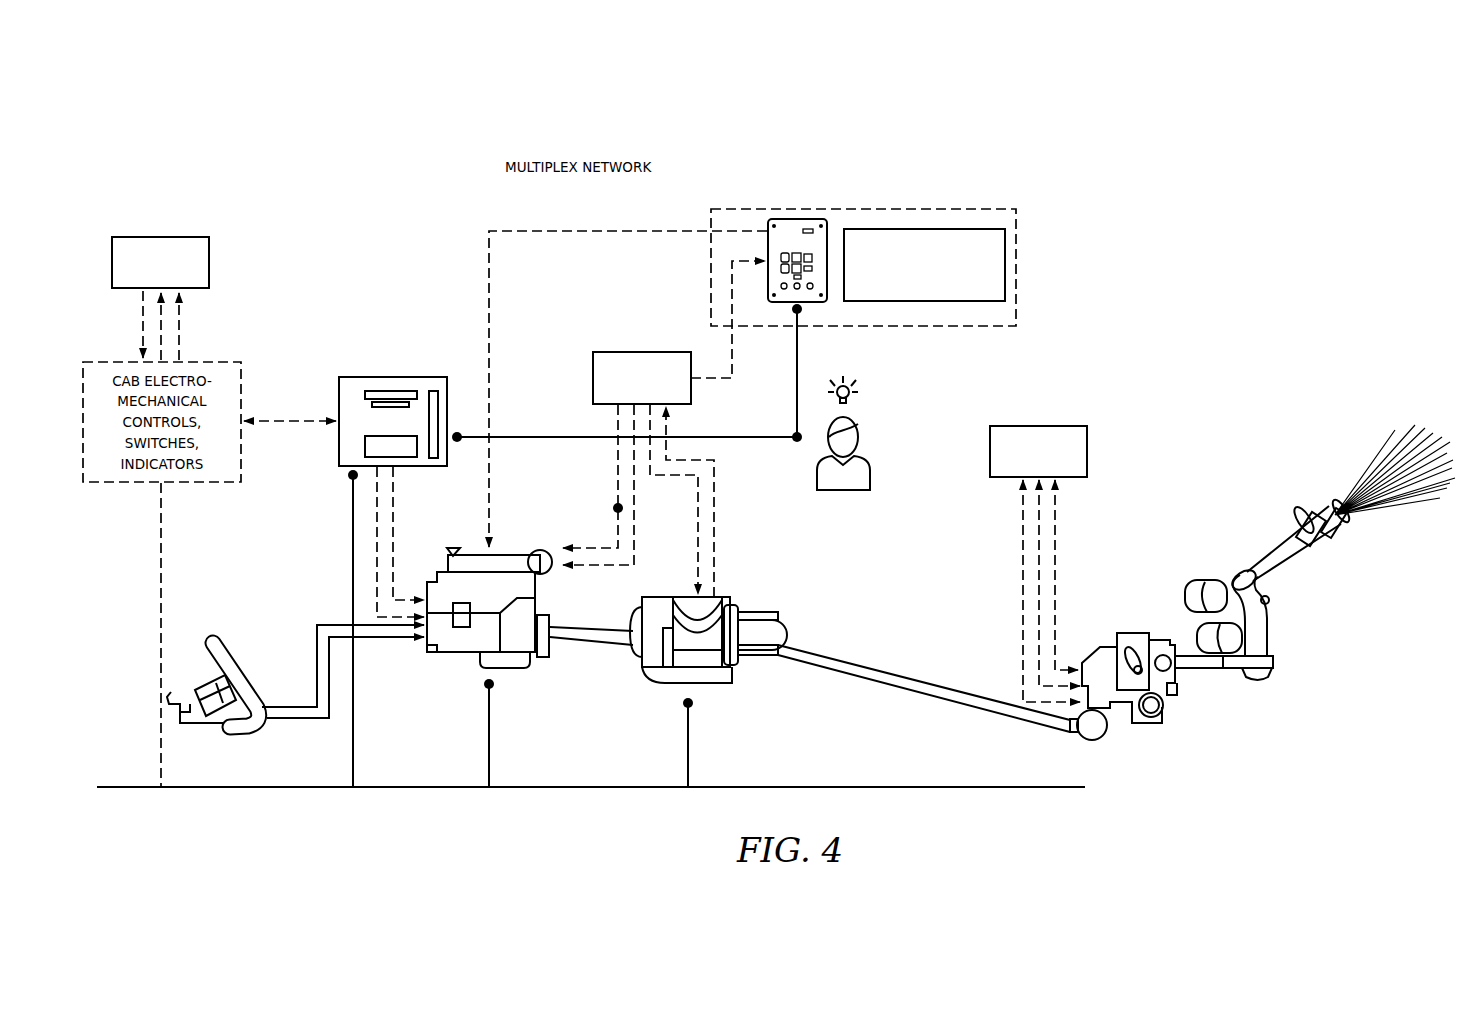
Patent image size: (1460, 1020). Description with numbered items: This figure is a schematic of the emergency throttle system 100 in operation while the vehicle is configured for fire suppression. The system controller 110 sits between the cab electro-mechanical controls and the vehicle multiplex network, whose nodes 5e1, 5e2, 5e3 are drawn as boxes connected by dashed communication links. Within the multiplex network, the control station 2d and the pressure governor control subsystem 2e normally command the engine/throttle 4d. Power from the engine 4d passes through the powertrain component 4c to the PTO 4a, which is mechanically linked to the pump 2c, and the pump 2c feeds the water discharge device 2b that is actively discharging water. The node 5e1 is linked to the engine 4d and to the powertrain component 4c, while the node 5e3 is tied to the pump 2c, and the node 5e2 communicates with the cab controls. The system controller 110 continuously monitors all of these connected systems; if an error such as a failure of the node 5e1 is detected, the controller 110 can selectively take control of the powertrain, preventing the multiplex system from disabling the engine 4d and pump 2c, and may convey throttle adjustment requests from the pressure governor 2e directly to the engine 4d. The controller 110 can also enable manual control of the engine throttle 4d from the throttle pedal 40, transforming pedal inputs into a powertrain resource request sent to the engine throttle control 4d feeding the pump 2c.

The emergency throttle system 100 is at (176, 132).
The multiplex system node 5e2 is at (190, 237).
The system controller 110 is at (393, 377).
The multiplex system node 5e1 is at (618, 352).
The control station 2d is at (797, 219).
The pressure governor control subsystem 2e is at (924, 265).
The multiplex system node 5e3 is at (1058, 426).
The fire suppression subcomponent 2b is at (1270, 540).
The pump 2c is at (1133, 633).
The engine/throttle 4d is at (458, 655).
The powertrain component 4c is at (646, 672).
The PTO 4a is at (1103, 740).
The throttle (accelerator) pedal 40 is at (238, 730).